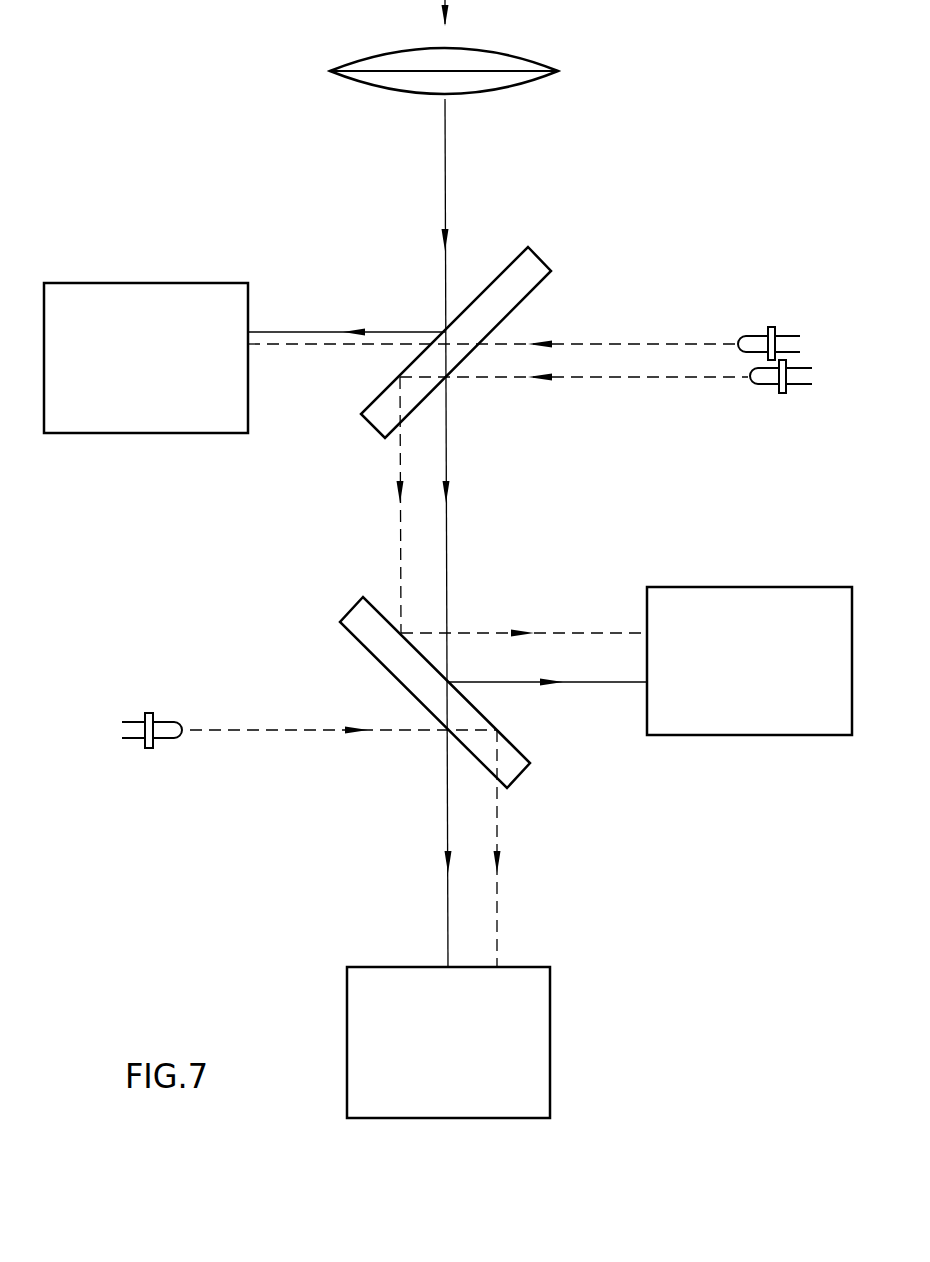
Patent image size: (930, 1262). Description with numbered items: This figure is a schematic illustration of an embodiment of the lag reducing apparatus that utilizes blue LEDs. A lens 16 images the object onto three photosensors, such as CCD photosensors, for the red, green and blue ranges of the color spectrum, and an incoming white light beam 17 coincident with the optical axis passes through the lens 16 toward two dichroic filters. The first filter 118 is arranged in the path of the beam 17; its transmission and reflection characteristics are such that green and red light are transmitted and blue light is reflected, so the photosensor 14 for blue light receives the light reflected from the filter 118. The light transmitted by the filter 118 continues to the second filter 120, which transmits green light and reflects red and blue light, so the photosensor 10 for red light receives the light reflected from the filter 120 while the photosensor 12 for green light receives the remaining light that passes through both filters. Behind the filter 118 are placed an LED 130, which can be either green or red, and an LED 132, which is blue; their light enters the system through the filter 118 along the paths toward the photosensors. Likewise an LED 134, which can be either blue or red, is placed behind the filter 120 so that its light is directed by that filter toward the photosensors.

The photosensor 10 is at (773, 587).
The photosensor 12 is at (550, 1027).
The photosensor 14 is at (109, 283).
The lens 16 is at (513, 63).
The white light beam 17 is at (443, 150).
The filter 118 is at (528, 255).
The filter 120 is at (355, 607).
The LED 130 is at (758, 328).
The LED 132 is at (759, 387).
The LED 134 is at (155, 750).